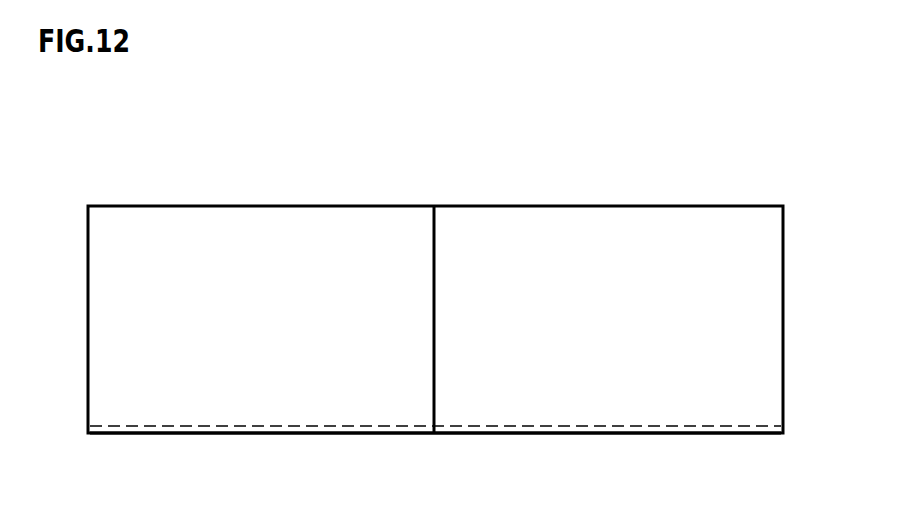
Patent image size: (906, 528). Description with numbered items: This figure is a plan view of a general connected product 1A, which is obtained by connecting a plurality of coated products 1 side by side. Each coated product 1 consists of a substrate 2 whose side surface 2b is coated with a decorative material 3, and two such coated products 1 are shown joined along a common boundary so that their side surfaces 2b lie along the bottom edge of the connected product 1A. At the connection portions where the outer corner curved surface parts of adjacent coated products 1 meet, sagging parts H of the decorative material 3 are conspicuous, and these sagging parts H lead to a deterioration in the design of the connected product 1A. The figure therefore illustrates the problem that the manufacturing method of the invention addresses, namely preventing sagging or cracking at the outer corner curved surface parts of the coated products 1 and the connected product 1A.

The coated product 1 is at (276, 192).
The connected product 1A is at (413, 172).
The substrate 2 is at (200, 255).
The side surface 2b is at (180, 427).
The decorative material 3 is at (137, 247).
The sagging part H is at (432, 442).